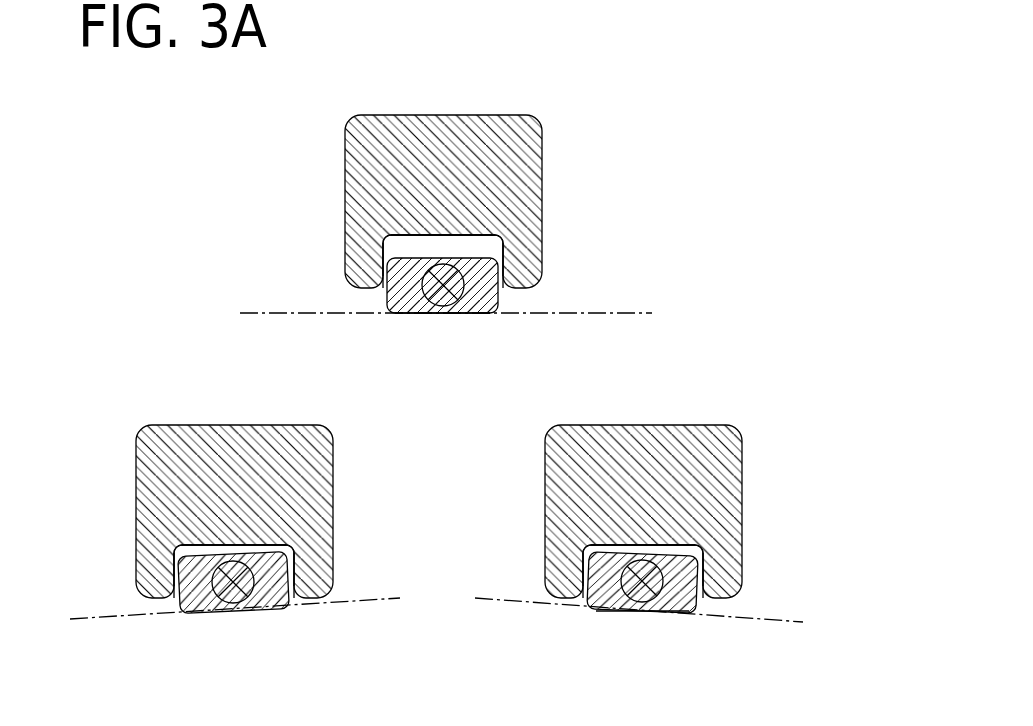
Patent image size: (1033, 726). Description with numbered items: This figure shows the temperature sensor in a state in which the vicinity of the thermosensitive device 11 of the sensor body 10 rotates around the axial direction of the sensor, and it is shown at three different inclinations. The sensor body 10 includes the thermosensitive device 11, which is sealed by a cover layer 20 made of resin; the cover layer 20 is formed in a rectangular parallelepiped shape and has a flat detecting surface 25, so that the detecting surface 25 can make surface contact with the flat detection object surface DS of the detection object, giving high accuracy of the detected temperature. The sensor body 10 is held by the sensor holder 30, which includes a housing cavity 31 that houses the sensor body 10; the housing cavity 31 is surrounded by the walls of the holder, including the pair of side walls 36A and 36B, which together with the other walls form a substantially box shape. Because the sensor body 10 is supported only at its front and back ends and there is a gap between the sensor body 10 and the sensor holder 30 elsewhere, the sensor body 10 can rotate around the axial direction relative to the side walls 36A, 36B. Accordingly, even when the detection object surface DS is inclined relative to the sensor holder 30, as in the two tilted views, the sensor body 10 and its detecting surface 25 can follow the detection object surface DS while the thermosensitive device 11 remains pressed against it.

The sensor body 10 is at (409, 304).
The thermosensitive device 11 is at (455, 300).
The cover layer 20 is at (505, 300).
The detecting surface 25 is at (480, 387).
The sensor holder 30 is at (543, 172).
The housing cavity 31 is at (317, 221).
The side wall 36A is at (543, 243).
The side wall 36B is at (415, 247).
The detection object surface DS is at (610, 313).